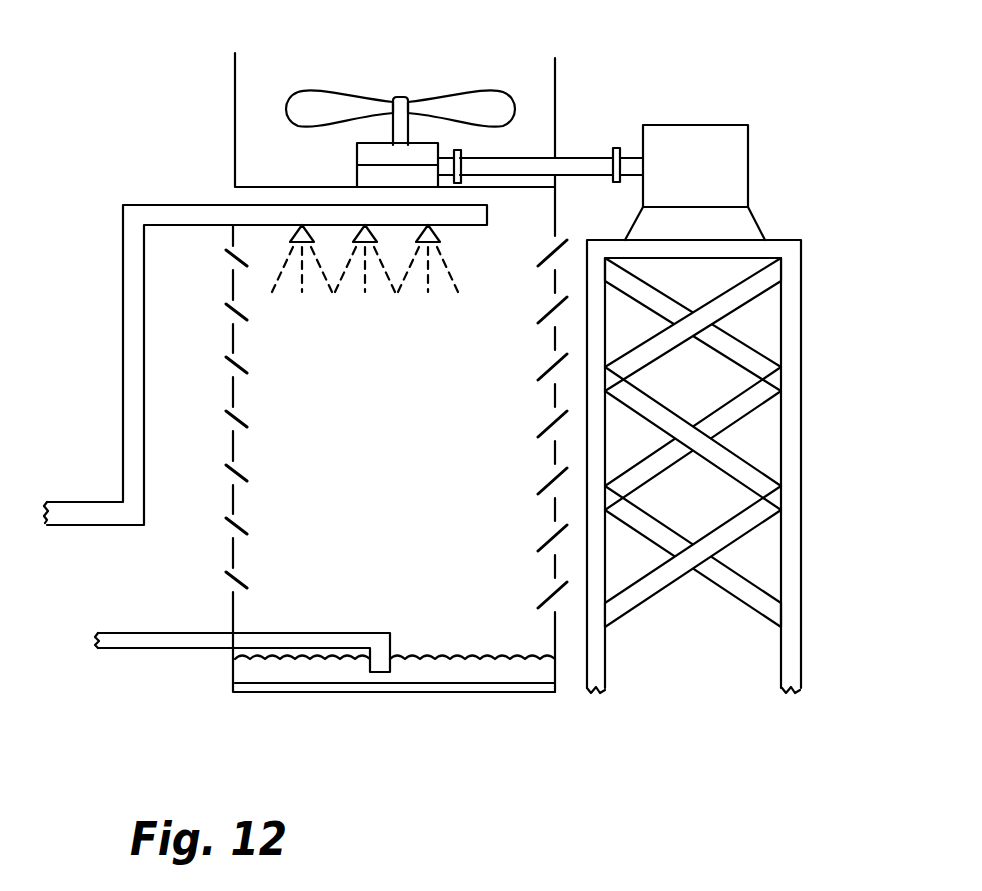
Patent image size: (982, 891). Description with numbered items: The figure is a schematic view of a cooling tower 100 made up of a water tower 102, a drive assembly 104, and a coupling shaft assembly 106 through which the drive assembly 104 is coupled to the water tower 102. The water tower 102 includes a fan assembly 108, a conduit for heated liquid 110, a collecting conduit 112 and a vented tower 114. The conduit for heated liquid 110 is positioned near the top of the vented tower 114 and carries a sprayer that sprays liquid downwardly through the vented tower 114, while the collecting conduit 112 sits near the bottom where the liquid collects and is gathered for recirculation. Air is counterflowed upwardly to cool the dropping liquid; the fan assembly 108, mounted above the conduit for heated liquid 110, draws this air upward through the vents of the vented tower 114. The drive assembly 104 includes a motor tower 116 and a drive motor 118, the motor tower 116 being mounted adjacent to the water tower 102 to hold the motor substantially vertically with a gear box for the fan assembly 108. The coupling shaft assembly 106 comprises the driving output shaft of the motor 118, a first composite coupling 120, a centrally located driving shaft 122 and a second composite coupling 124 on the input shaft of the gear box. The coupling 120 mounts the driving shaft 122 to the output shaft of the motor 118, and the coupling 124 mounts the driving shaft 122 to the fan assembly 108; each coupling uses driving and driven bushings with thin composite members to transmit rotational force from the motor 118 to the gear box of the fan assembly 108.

The cooling tower 100 is at (738, 83).
The water tower 102 is at (400, 103).
The drive assembly 104 is at (734, 423).
The coupling shaft assembly 106 is at (578, 142).
The fan assembly 108 is at (411, 96).
The conduit for heated liquid 110 is at (122, 330).
The collecting conduit 112 is at (212, 645).
The vented tower 114 is at (222, 542).
The motor tower 116 is at (802, 362).
The drive motor 118 is at (750, 152).
The first composite coupling 120 is at (617, 146).
The driving shaft 122 is at (515, 157).
The second composite coupling 124 is at (462, 188).